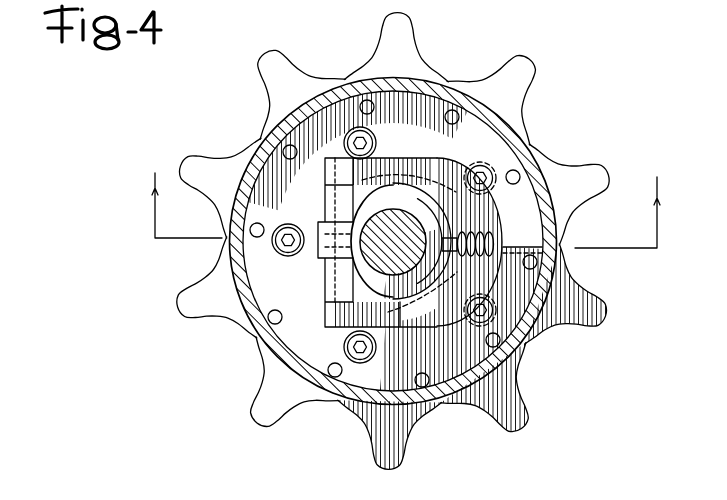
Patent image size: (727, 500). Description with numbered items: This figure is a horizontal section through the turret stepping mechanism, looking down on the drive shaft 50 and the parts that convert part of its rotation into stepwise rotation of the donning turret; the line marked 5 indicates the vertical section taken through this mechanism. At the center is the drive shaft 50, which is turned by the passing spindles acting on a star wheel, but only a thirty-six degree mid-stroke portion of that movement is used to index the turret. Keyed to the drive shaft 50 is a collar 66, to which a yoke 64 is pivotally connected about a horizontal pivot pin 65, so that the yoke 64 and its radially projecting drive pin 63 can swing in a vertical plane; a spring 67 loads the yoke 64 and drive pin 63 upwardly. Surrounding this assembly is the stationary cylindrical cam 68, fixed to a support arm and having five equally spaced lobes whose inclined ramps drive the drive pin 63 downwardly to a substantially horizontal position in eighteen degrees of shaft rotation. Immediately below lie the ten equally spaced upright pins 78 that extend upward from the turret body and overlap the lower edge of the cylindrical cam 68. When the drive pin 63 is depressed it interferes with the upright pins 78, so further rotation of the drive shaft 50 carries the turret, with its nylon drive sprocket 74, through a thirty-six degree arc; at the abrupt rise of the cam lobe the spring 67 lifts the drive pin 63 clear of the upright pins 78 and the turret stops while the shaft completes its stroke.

The drive sprocket 74 is at (591, 172).
The stationary cylindrical cam 68 is at (273, 131).
The drive pin 63 is at (514, 246).
The upright pins 78 is at (359, 108).
The yoke 64 is at (443, 318).
The collar 66 is at (402, 184).
The horizontal pivot pin 65 is at (326, 204).
The drive shaft 50 is at (401, 215).
The spring 67 is at (487, 238).
The section line 5- 5 is at (407, 210).